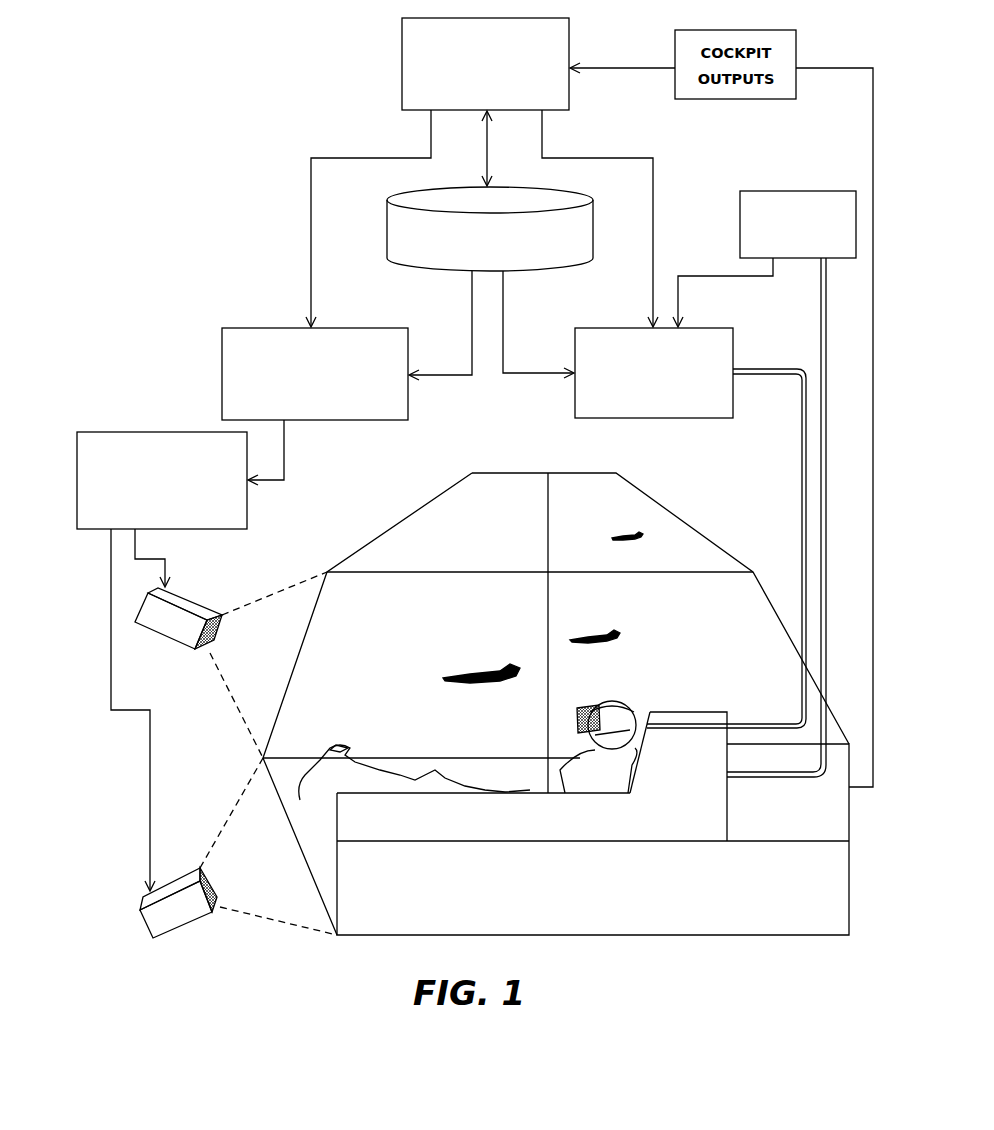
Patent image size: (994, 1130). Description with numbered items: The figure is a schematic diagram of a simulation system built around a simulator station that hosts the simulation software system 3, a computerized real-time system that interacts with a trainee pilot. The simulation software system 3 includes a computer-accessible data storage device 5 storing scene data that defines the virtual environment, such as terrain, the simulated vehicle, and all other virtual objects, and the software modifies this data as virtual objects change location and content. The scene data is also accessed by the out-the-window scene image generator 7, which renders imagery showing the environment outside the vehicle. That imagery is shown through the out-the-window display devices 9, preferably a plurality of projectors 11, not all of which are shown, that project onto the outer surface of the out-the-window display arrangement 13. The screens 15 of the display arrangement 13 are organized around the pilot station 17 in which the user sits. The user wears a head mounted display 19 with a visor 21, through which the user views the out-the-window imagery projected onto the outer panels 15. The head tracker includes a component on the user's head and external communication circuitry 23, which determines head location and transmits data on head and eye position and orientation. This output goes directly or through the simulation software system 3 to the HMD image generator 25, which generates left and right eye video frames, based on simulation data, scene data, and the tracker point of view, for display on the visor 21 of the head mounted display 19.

The simulation software system 3 is at (402, 88).
The data storage device 5 is at (400, 247).
The out-the-window scene image generator 7 is at (222, 360).
The out-the-window display devices 9 is at (126, 432).
The projectors 11 is at (168, 630).
The out-the-window display arrangement 13 is at (420, 505).
The screens 15 is at (597, 597).
The pilot station 17 is at (526, 833).
The head mounted display 19 is at (617, 718).
The visor 21 is at (577, 727).
The head tracker circuitry 23 is at (740, 215).
The HMD image generator 25 is at (733, 348).